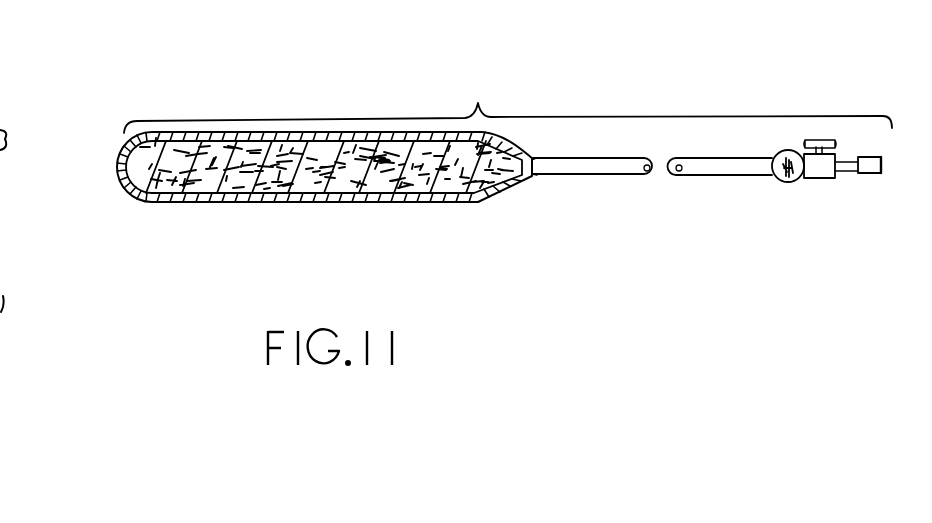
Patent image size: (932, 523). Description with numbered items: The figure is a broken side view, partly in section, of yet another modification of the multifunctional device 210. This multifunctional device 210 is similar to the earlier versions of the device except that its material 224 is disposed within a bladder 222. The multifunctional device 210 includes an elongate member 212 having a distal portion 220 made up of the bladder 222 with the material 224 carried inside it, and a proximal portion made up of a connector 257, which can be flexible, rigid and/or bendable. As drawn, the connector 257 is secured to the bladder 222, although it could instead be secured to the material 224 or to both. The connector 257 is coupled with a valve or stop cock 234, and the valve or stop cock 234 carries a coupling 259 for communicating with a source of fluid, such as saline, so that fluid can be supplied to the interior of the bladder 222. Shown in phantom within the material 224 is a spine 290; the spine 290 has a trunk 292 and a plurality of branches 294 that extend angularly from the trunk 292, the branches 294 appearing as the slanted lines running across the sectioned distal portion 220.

The multifunctional device 210 is at (642, 140).
The elongate member 212 is at (573, 157).
The distal portion 220 is at (483, 128).
The bladder 222 is at (186, 135).
The material 224 is at (273, 148).
The valve or stop cock 234 is at (845, 155).
The connector 257 is at (750, 153).
The coupling 259 is at (867, 176).
The spine 290 is at (440, 178).
The trunk 292 is at (384, 108).
The branches 294 is at (207, 205).